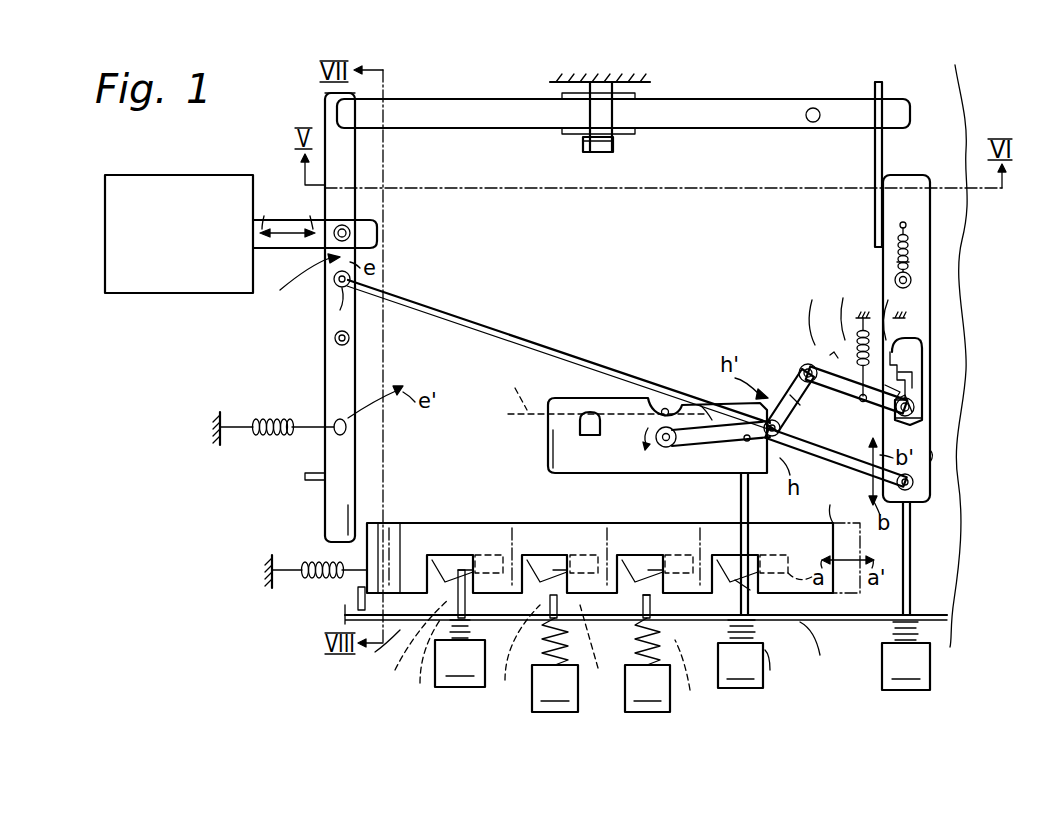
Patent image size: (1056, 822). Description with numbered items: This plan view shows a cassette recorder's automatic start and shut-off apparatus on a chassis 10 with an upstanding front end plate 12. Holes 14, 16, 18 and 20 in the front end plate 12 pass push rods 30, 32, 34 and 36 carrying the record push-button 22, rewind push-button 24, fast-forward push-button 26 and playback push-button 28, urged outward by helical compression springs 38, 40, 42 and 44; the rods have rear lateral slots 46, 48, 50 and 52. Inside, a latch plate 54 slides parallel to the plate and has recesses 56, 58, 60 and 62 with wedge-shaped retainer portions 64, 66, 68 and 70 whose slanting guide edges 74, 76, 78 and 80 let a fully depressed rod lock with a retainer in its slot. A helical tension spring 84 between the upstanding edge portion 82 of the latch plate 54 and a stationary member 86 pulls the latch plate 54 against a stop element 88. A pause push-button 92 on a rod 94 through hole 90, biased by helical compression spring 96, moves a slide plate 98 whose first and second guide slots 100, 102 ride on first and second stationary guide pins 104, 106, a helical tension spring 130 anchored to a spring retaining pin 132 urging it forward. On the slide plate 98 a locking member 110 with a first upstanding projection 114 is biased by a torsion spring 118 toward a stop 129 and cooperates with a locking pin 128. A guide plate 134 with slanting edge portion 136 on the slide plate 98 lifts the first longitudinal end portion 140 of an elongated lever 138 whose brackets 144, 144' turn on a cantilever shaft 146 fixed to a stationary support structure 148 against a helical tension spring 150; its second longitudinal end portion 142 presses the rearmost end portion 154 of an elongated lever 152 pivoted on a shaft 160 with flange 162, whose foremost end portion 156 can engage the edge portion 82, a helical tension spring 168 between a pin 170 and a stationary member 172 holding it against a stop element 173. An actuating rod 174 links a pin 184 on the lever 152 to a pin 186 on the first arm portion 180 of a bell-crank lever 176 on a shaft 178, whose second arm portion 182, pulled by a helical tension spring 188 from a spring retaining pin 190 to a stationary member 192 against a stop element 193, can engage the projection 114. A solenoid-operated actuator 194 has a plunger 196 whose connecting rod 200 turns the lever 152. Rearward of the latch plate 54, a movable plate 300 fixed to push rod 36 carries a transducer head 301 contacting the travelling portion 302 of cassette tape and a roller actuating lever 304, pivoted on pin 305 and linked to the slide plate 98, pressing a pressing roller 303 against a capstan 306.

The chassis 10 is at (976, 126).
The front end plate 12 is at (860, 620).
The hole 14 is at (414, 648).
The hole 16 is at (515, 653).
The hole 18 is at (659, 641).
The hole 20 is at (752, 618).
The record push-button 22 is at (460, 628).
The rewind push-button 24 is at (555, 653).
The fast-forward push-button 26 is at (647, 653).
The playback push-button 28 is at (740, 654).
The push rod 30 is at (371, 656).
The push rod 32 is at (542, 636).
The push rod 34 is at (640, 625).
The push rod 36 is at (818, 644).
The helical compression spring 38 is at (421, 665).
The helical compression spring 40 is at (595, 648).
The helical compression spring 42 is at (690, 672).
The helical compression spring 44 is at (780, 665).
The lateral slot 46 is at (496, 549).
The lateral slot 48 is at (592, 549).
The lateral slot 50 is at (687, 549).
The lateral slot 52 is at (794, 552).
The latch plate 54 is at (822, 498).
The recess 56 is at (400, 523).
The recess 58 is at (512, 528).
The recess 60 is at (607, 528).
The recess 62 is at (702, 528).
The retainer portion 64 is at (470, 555).
The retainer portion 66 is at (561, 547).
The retainer portion 68 is at (657, 547).
The retainer portion 70 is at (728, 560).
The guide edge 74 is at (440, 558).
The guide edge 76 is at (535, 558).
The guide edge 78 is at (630, 558).
The guide edge 80 is at (735, 600).
The upstanding edge portion 82 is at (378, 523).
The helical tension spring 84 is at (310, 562).
The stationary member 86 is at (275, 586).
The stop element 88 is at (358, 598).
The hole 90 is at (916, 612).
The pause push-button 92 is at (906, 666).
The rod 94 is at (930, 545).
The helical compression spring 96 is at (893, 640).
The slide plate 98 is at (930, 478).
The first guide slot 100 is at (922, 385).
The second guide slot 102 is at (909, 262).
The first stationary guide pin 104 is at (922, 420).
The second stationary guide pin 106 is at (911, 282).
The locking member 110 is at (922, 348).
The first upstanding projection 114 is at (930, 455).
The torsion spring 118 is at (914, 405).
The locking pin 128 is at (888, 302).
The stop 129 is at (895, 338).
The helical tension spring 130 is at (898, 244).
The spring retaining pin 132 is at (900, 224).
The guide plate 134 is at (868, 158).
The edge portion 136 is at (875, 84).
The elongated lever 138 is at (772, 128).
The first longitudinal end portion 140 is at (900, 99).
The second longitudinal end portion 142 is at (355, 135).
The bracket 144 is at (633, 129).
The bracket 144' is at (639, 97).
The cantilever shaft 146 is at (583, 148).
The stationary support structure 148 is at (550, 84).
The helical tension spring 150 is at (806, 110).
The elongated lever 152 is at (318, 375).
The rearmost end portion 154 is at (325, 104).
The foremost end portion 156 is at (325, 530).
The shaft 160 is at (335, 339).
The flange 162 is at (340, 312).
The helical tension spring 168 is at (268, 436).
The pin 170 is at (334, 423).
The stationary member 172 is at (222, 415).
The stop element 173 is at (305, 477).
The actuating rod 174 is at (580, 360).
The bell-crank lever 176 is at (815, 365).
The shaft 178 is at (795, 395).
The first arm portion 180 is at (800, 370).
The second arm portion 182 is at (820, 448).
The pin 184 is at (355, 322).
The pin 186 is at (741, 540).
The helical tension spring 188 is at (857, 345).
The spring retaining pin 190 is at (873, 447).
The stationary member 192 is at (843, 298).
The stop element 193 is at (813, 310).
The solenoid-operated actuator 194 is at (163, 175).
The plunger 196 is at (377, 218).
The connecting rod 200 is at (352, 238).
The movable plate 300 is at (548, 441).
The transducer head 301 is at (582, 425).
The travelling portion of cassette tape 302 is at (604, 387).
The pressing roller 303 is at (652, 448).
The roller actuating lever 304 is at (708, 440).
The pin 305 is at (700, 405).
The capstan 306 is at (665, 408).